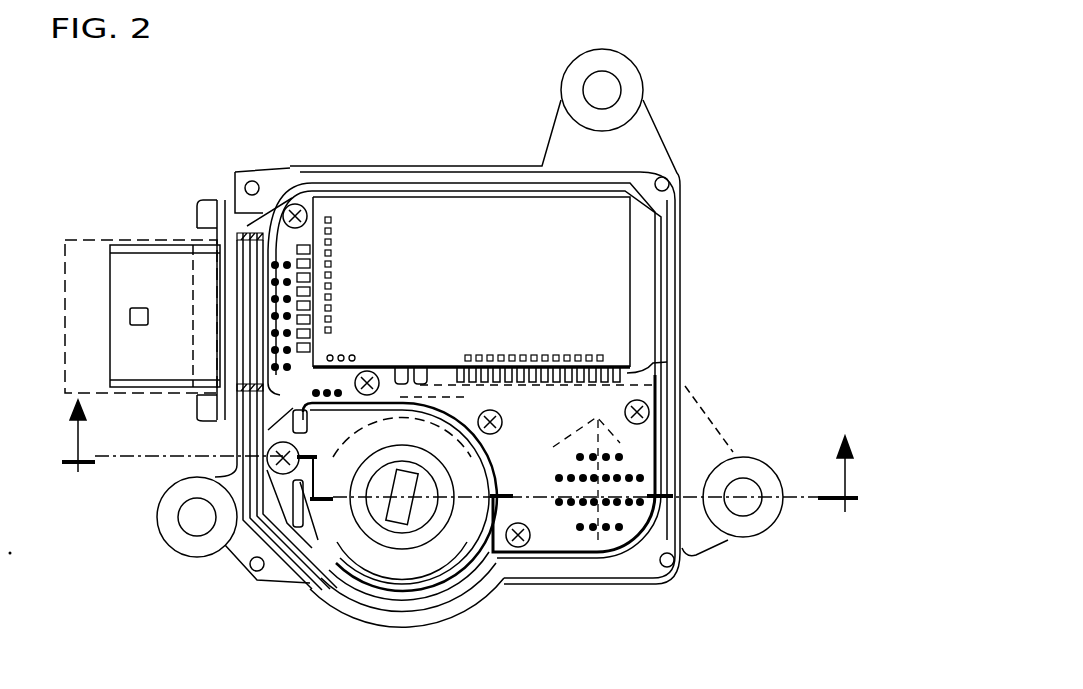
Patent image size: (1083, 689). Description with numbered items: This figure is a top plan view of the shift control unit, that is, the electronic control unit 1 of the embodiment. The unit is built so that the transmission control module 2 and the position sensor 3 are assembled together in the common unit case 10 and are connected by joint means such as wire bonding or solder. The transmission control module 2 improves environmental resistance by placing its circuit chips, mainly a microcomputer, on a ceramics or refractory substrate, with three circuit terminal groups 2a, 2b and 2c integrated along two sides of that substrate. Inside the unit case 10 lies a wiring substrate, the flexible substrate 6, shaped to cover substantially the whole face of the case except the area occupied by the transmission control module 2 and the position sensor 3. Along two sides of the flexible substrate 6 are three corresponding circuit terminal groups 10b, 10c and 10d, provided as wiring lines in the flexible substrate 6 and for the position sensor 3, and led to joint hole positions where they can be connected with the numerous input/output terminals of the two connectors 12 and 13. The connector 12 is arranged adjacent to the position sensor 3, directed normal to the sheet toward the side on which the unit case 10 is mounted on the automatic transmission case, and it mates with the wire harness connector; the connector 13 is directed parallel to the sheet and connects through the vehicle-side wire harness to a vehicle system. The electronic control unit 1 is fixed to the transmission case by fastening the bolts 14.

The electronic control unit 1 is at (437, 160).
The transmission control module 2 is at (492, 288).
The circuit terminal group 2a is at (540, 355).
The circuit terminal group 2b is at (333, 280).
The circuit terminal group 2c is at (352, 357).
The position sensor 3 is at (352, 543).
The flexible substrate 6 is at (540, 424).
The unit case 10 is at (680, 296).
The circuit terminal group 10b is at (668, 364).
The circuit terminal group 10c is at (278, 186).
The circuit terminal group 10d is at (420, 365).
The connector 12 is at (587, 538).
The connector 13 is at (160, 242).
The bolts 14 is at (605, 82).